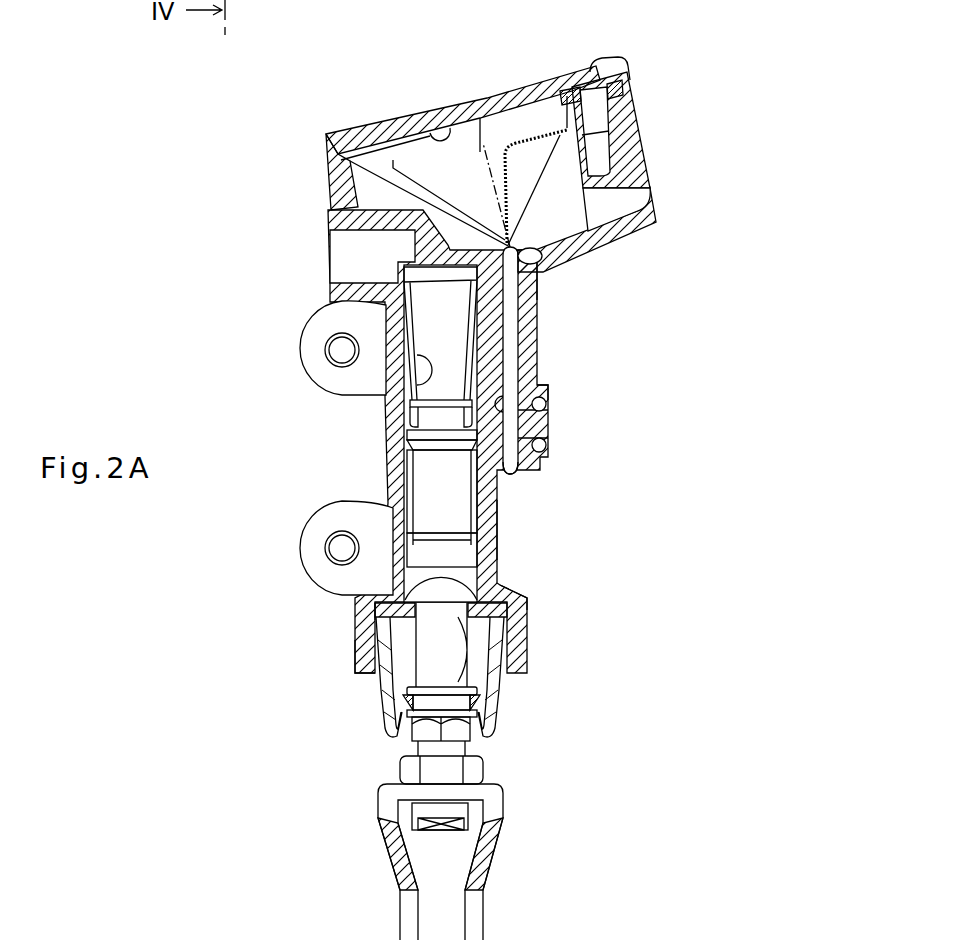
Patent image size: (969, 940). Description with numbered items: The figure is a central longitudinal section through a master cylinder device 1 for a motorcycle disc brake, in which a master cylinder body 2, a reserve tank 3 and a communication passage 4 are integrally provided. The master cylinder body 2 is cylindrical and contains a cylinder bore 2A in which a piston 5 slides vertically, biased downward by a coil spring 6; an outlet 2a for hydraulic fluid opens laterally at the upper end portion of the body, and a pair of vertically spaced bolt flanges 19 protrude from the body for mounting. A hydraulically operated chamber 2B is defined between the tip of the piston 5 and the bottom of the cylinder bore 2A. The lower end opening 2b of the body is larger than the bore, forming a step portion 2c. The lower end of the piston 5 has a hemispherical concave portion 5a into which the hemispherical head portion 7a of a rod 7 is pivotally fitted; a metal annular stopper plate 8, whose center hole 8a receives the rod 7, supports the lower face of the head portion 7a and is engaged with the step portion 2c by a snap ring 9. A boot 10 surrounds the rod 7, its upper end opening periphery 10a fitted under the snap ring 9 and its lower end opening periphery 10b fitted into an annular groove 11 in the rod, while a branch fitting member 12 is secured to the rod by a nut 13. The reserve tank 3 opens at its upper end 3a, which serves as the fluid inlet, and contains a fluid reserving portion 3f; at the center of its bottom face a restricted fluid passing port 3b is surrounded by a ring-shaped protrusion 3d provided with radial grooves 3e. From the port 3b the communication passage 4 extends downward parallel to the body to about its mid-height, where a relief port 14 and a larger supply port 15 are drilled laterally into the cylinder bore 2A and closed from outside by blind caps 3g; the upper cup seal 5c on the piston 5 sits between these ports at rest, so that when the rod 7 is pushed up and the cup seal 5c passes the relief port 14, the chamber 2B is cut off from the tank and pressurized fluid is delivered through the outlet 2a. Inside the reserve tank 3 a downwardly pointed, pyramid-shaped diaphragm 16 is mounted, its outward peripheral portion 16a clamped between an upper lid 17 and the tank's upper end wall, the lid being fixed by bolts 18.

The master cylinder device 1 is at (632, 480).
The master cylinder body 2 is at (393, 482).
The cylinder bore 2A is at (352, 556).
The outlet 2a is at (342, 250).
The hydraulically operated chamber 2B is at (445, 305).
The lower end opening 2b is at (358, 650).
The step portion 2c is at (500, 593).
The reserve tank 3 is at (510, 181).
The upper end 3a is at (448, 137).
The fluid passing port 3b is at (565, 242).
The ring-shaped protrusion 3d is at (575, 236).
The grooves 3e is at (545, 270).
The fluid reserving portion 3f is at (610, 203).
The blind caps 3g is at (543, 446).
The communication passage 4 is at (513, 338).
The piston 5 is at (463, 509).
The hemispherical concave portion 5a is at (466, 576).
The upper cup seal 5c is at (410, 432).
The coil spring 6 is at (407, 403).
The rod 7 is at (337, 647).
The hemispherical head portion 7a is at (425, 592).
The annular stopper plate 8 is at (505, 604).
The center hole 8a is at (480, 690).
The snap ring 9 is at (375, 617).
The boot 10 is at (496, 683).
The upper end opening periphery 10a is at (503, 632).
The lower end opening periphery 10b is at (493, 703).
The annular groove 11 is at (405, 710).
The branch fitting member 12 is at (490, 855).
The nut 13 is at (485, 773).
The relief port 14 is at (548, 388).
The supply port 15 is at (500, 476).
The diaphragm 16 is at (533, 152).
The outward peripheral portion 16a is at (627, 93).
The upper lid 17 is at (345, 130).
The bolts 18 is at (592, 66).
The bolt flanges 19 is at (283, 448).